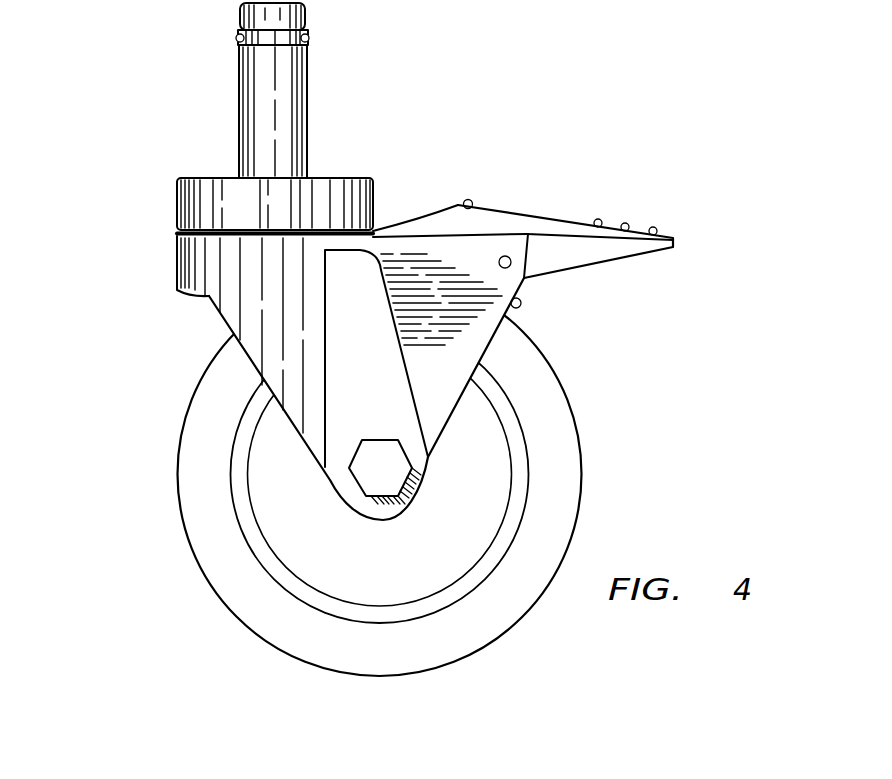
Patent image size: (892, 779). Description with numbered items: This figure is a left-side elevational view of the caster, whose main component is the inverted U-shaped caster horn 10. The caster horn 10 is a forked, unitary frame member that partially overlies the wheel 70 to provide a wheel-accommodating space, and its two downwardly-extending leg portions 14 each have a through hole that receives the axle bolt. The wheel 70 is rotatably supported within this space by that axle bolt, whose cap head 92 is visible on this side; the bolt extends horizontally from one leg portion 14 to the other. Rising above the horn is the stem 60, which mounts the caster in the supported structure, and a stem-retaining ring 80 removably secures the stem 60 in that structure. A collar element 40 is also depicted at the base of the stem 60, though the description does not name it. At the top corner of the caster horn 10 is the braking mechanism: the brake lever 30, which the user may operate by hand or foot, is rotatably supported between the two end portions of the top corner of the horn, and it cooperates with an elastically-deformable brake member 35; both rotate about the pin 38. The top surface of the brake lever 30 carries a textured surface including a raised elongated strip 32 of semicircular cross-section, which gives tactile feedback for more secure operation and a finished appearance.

The caster horn 10 is at (361, 375).
The leg portion 14 is at (228, 297).
The brake lever 30 is at (575, 218).
The raised elongated strip 32 is at (470, 200).
The brake member 35 is at (521, 303).
The pin 38 is at (505, 256).
The collar nut 40 is at (196, 205).
The stem 60 is at (250, 116).
The wheel 70 is at (560, 433).
The stem-retaining ring 80 is at (307, 38).
The cap head 92 is at (380, 487).